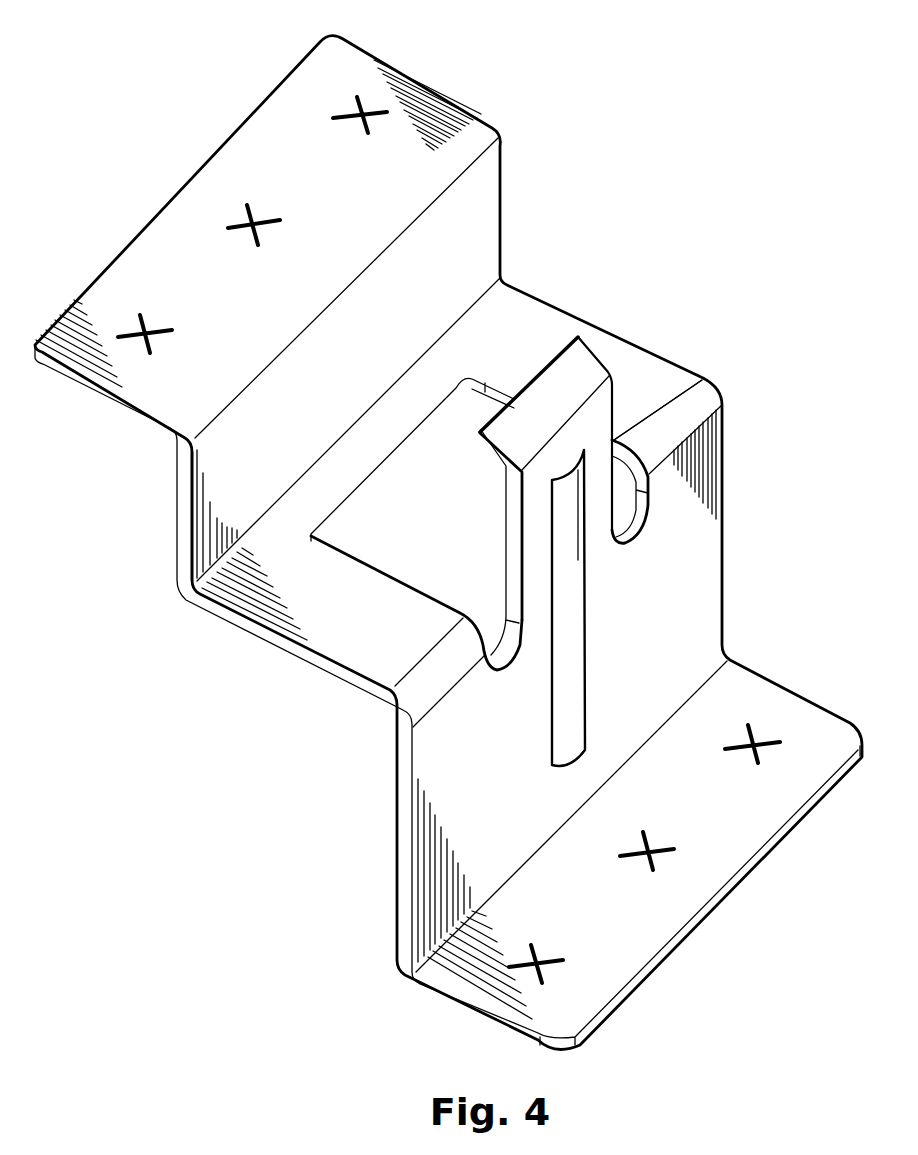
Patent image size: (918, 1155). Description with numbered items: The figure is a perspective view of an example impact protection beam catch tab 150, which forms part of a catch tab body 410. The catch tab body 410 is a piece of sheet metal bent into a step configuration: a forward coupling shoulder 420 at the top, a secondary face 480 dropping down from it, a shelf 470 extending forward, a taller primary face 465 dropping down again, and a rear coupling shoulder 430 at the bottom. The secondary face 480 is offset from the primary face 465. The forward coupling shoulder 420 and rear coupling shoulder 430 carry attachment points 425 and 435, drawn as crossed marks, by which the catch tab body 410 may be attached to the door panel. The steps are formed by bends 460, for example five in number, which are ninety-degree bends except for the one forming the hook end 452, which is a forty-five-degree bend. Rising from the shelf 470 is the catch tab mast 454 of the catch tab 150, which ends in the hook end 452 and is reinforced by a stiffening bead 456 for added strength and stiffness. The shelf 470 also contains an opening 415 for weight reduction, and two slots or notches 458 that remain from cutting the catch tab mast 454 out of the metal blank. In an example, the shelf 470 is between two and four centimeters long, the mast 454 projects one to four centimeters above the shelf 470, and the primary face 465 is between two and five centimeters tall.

The impact protection beam catch tab 150 is at (488, 468).
The catch tab body 410 is at (644, 90).
The opening 415 is at (418, 494).
The forward coupling shoulder 420 is at (284, 104).
The attachment points 425 is at (345, 123).
The rear coupling shoulder 430 is at (795, 706).
The attachment points 435 is at (738, 752).
The hook end 452 is at (580, 368).
The catch tab mast 454 is at (597, 415).
The stiffening bead 456 is at (574, 624).
The slots or notches 458 is at (643, 506).
The bends 460 is at (172, 432).
The primary face 465 is at (712, 589).
The shelf 470 is at (543, 316).
The secondary face 480 is at (487, 206).